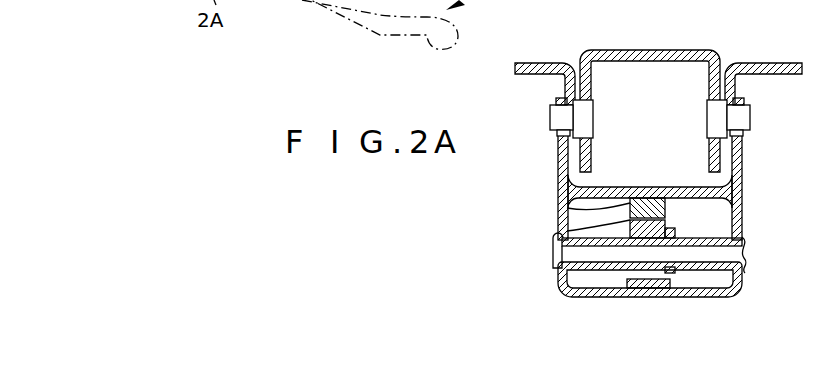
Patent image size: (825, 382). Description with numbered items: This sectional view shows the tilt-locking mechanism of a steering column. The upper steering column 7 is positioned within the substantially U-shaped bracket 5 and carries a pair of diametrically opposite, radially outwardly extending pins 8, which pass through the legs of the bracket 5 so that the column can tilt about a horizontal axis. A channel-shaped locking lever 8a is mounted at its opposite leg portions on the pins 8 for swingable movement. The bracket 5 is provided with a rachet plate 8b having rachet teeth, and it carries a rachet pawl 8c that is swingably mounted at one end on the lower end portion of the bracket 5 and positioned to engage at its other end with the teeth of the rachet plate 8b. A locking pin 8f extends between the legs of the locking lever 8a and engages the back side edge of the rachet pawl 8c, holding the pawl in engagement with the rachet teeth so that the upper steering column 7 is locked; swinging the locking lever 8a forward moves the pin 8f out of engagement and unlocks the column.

The bracket 5 is at (540, 63).
The upper steering column 7 is at (683, 50).
The pins 8 is at (557, 115).
The locking lever 8a is at (742, 218).
The rachet plate 8b is at (567, 208).
The rachet pawl 8c is at (553, 240).
The locking pin 8f is at (728, 263).